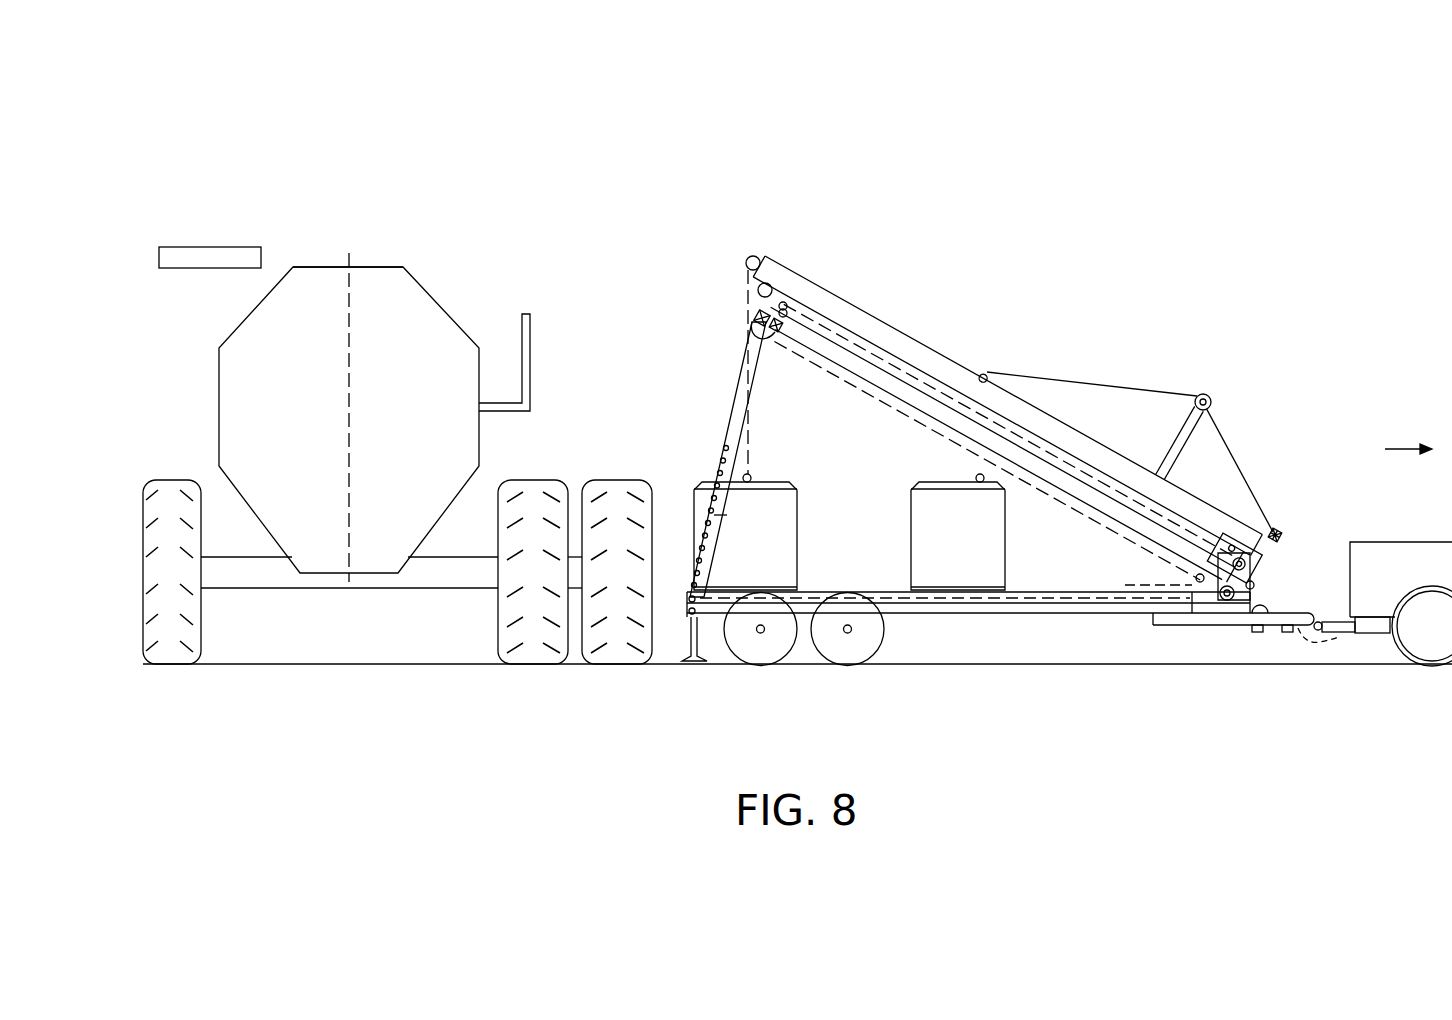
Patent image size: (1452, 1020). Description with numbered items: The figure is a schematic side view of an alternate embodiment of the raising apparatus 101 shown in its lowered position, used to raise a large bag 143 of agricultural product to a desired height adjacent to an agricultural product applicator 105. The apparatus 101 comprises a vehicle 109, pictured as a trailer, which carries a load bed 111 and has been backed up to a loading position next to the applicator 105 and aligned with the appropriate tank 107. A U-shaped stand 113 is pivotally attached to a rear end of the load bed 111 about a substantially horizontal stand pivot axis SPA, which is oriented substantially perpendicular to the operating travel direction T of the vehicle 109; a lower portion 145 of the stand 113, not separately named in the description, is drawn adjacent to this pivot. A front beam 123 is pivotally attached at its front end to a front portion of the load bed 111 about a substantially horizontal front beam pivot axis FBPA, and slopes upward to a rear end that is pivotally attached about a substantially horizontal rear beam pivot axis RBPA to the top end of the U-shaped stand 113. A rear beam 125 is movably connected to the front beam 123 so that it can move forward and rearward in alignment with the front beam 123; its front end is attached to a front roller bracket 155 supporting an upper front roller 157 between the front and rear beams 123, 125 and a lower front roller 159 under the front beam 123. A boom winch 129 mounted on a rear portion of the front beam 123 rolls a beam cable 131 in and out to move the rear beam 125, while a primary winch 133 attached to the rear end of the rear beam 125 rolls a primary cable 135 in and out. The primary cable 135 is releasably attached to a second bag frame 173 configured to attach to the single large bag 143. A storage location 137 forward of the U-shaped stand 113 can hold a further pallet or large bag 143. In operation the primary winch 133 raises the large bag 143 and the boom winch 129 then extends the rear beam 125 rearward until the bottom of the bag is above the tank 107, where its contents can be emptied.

The raising apparatus 101 is at (1114, 226).
The agricultural product applicator 105 is at (219, 385).
The tank 107 is at (362, 267).
The vehicle 109 is at (1214, 614).
The load bed 111 is at (1262, 604).
The U-shaped stand 113 is at (734, 402).
The front beam 123 is at (1065, 493).
The rear beam 125 is at (888, 323).
The boom winch 129 is at (779, 298).
The beam cable 131 is at (926, 376).
The primary winch 133 is at (757, 257).
The primary cable 135 is at (746, 298).
The storage location 137 is at (878, 592).
The large bag 143 is at (797, 505).
The adjustable strut extension 145 is at (721, 452).
The front roller bracket 155 is at (1240, 545).
The upper front roller 157 is at (1250, 556).
The lower front roller 159 is at (1230, 597).
The second bag frame 173 is at (748, 474).
The rear beam pivot axis RBPA is at (758, 337).
The front beam pivot axis FBPA is at (1253, 584).
The stand pivot axis SPA is at (687, 608).
The operating travel direction T is at (1408, 433).